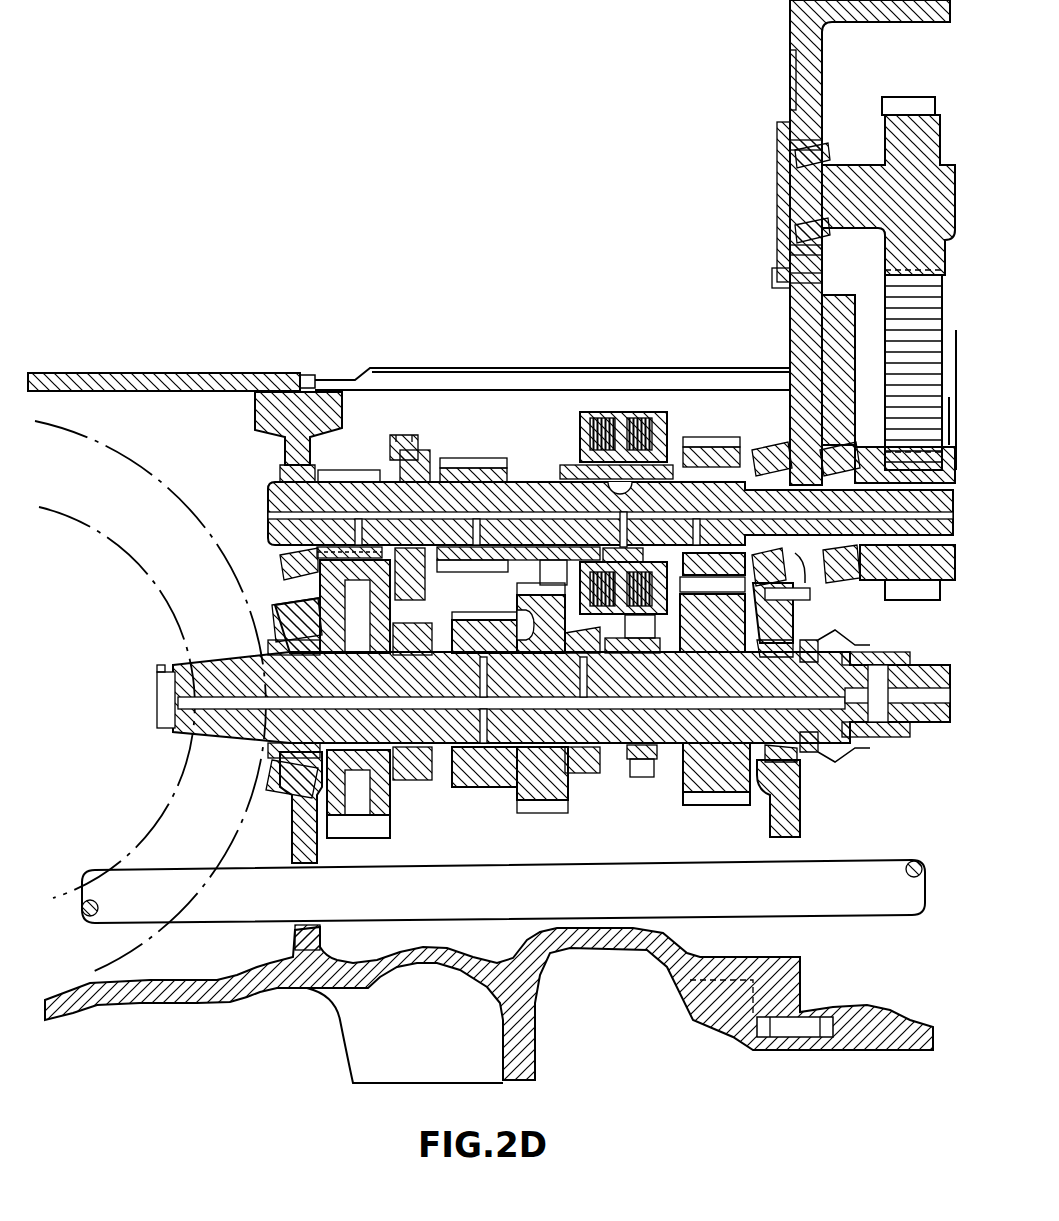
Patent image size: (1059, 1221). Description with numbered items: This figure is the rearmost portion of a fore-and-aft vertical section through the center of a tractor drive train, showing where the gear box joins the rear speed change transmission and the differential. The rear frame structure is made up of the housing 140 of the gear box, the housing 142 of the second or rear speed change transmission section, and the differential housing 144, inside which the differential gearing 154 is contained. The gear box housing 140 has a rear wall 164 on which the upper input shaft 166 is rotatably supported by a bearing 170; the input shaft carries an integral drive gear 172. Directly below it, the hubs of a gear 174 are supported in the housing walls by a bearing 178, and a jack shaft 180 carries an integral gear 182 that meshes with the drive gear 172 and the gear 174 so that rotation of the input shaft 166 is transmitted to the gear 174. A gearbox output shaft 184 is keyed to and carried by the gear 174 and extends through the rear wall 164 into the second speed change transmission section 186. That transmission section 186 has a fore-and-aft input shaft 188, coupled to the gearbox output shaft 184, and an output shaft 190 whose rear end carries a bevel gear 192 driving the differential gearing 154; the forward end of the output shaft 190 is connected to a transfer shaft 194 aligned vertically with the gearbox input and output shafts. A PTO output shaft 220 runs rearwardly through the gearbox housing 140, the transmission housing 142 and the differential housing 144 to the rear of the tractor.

The gear box housing 140 is at (790, 32).
The housing of second speed change transmission section 142 is at (697, 975).
The differential housing 144 is at (150, 997).
The differential gearing 154 is at (228, 525).
The rear wall 164 is at (812, 100).
The upper input shaft 166 is at (866, 228).
The bearing 170 is at (815, 162).
The drive gear 172 is at (905, 112).
The gear 174 is at (920, 585).
The bearing 178 is at (810, 583).
The jack shaft 180 is at (870, 330).
The gear 182 is at (885, 300).
The gearbox output shaft 184 is at (923, 535).
The second speed change transmission section 186 is at (497, 440).
The input shaft 188 is at (525, 490).
The output shaft 190 is at (663, 684).
The bevel gear 192 is at (226, 646).
The transfer shaft 194 is at (940, 668).
The PTO output shaft 220 is at (871, 874).